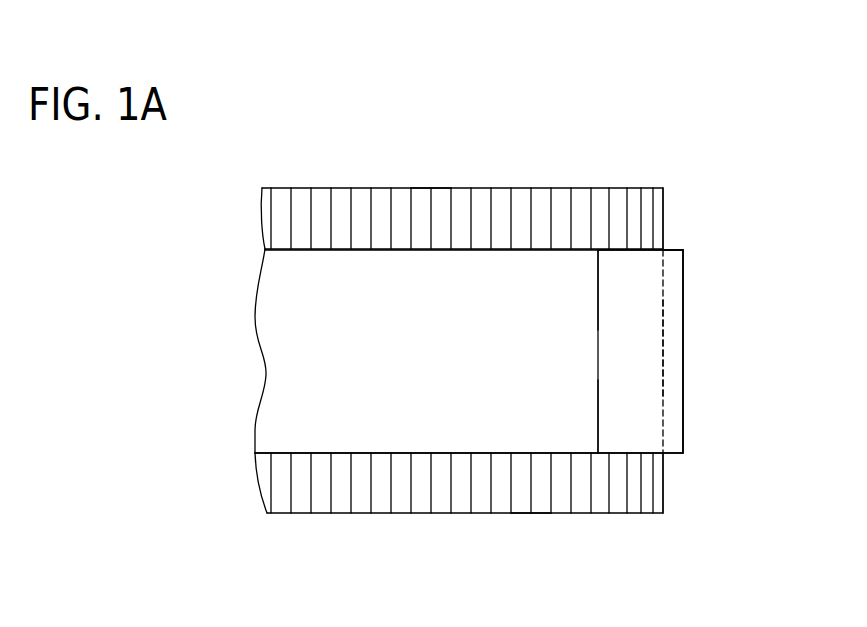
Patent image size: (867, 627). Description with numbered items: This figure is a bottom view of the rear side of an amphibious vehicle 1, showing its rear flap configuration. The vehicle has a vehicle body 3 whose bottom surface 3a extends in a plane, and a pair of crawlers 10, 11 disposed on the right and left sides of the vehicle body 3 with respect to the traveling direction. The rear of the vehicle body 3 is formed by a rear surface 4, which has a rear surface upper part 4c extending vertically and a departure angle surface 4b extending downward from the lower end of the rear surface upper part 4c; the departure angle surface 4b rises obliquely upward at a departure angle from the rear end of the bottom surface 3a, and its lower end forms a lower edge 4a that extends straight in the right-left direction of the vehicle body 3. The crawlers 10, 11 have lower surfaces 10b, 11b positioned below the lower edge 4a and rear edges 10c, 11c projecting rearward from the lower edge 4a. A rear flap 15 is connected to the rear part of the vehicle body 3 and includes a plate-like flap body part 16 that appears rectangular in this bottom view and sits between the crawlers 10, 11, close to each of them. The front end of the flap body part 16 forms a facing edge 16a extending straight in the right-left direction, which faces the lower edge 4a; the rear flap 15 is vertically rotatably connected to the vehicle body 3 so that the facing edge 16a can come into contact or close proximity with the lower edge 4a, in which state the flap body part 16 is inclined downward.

The amphibious vehicle 1 is at (634, 140).
The vehicle body 3 is at (264, 312).
The bottom surface 3a is at (262, 366).
The rear surface 4 is at (667, 278).
The lower edge 4a is at (598, 407).
The departure angle surface 4b is at (645, 380).
The rear surface upper part 4c is at (663, 346).
The crawler 10 is at (482, 513).
The lower surface 10b is at (540, 513).
The rear edge 10c is at (663, 480).
The crawler 11 is at (477, 188).
The lower surface 11b is at (422, 188).
The rear edge 11c is at (663, 221).
The rear flap 15 is at (699, 294).
The flap body part 16 is at (673, 430).
The facing edge 16a is at (598, 357).